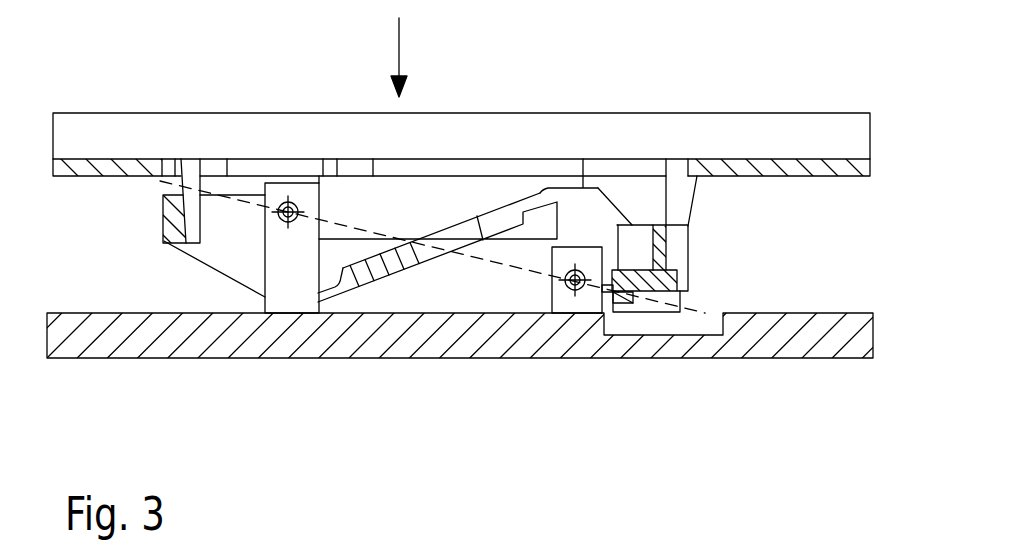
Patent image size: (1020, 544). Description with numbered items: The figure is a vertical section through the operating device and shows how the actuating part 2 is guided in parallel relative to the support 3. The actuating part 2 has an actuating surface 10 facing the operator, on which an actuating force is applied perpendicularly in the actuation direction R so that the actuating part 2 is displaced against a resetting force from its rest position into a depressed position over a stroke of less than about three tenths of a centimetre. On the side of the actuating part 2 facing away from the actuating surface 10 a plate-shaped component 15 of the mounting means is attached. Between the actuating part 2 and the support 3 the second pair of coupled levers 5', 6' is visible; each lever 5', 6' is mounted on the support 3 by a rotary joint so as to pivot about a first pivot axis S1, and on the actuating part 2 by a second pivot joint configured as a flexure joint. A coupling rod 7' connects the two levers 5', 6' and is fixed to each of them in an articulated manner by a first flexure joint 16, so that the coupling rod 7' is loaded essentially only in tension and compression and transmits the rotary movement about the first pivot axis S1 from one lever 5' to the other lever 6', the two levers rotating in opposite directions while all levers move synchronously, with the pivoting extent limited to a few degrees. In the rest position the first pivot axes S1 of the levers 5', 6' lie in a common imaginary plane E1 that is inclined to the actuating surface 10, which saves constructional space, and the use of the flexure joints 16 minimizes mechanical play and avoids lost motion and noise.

The actuating surface 10 is at (462, 113).
The actuation direction R is at (406, 57).
The actuating part 2 is at (787, 128).
The plate-shaped component 15 is at (829, 176).
The support 3 is at (823, 347).
The lever 6' is at (194, 172).
The lever 5' is at (645, 183).
The coupling rod 7' is at (437, 313).
The first flexure joint 16 is at (540, 186).
The first pivot axis S1 is at (292, 222).
The common imaginary plane E1 is at (697, 309).